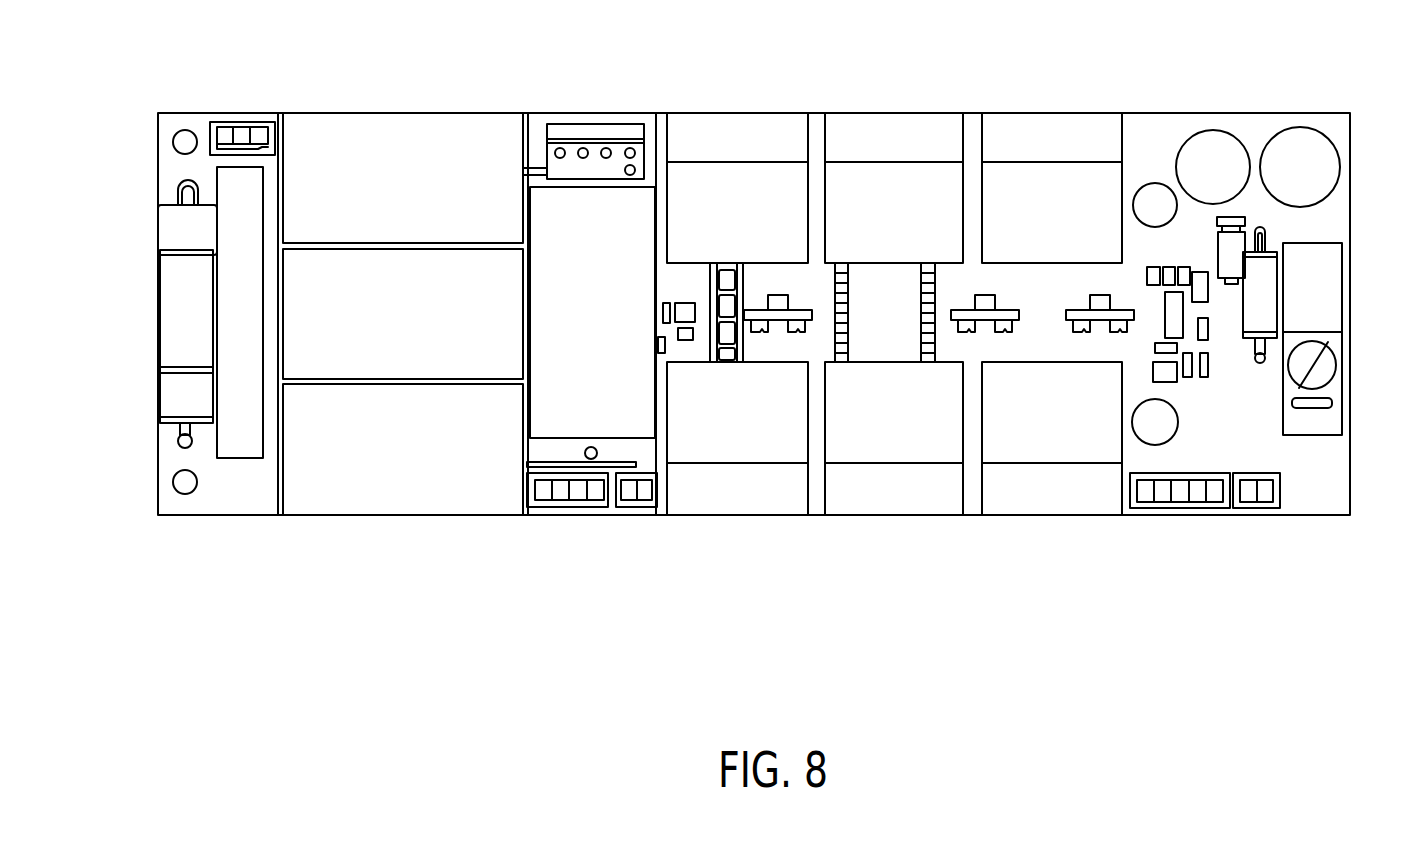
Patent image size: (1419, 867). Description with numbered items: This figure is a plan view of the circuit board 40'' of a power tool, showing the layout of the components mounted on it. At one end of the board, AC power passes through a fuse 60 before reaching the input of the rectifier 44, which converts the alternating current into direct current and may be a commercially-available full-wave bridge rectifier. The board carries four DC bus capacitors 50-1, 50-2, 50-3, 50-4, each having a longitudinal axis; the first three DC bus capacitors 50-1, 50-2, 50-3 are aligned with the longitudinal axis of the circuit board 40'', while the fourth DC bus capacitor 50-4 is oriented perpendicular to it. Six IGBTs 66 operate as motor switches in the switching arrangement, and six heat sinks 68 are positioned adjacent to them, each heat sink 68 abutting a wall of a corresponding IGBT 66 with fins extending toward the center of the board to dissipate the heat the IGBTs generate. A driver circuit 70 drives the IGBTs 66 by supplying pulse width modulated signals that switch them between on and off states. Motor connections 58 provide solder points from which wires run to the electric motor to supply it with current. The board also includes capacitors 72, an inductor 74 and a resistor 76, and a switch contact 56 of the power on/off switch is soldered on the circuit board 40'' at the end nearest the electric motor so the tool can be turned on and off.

The circuit board 40'' is at (754, 278).
The rectifier 44 is at (243, 460).
The DC bus capacitor 50-1 is at (408, 130).
The DC bus capacitor 50-2 is at (392, 348).
The DC bus capacitor 50-3 is at (403, 502).
The DC bus capacitor 50-4 is at (548, 356).
The switch contact 56 is at (1293, 357).
The motor connections 58 is at (780, 298).
The fuse 60 is at (178, 313).
The IGBTs 66 is at (688, 130).
The heat sinks 68 is at (743, 187).
The driver circuit 70 is at (905, 363).
The capacitors 72 is at (1143, 415).
The inductor 74 is at (1300, 152).
The resistor 76 is at (1268, 266).